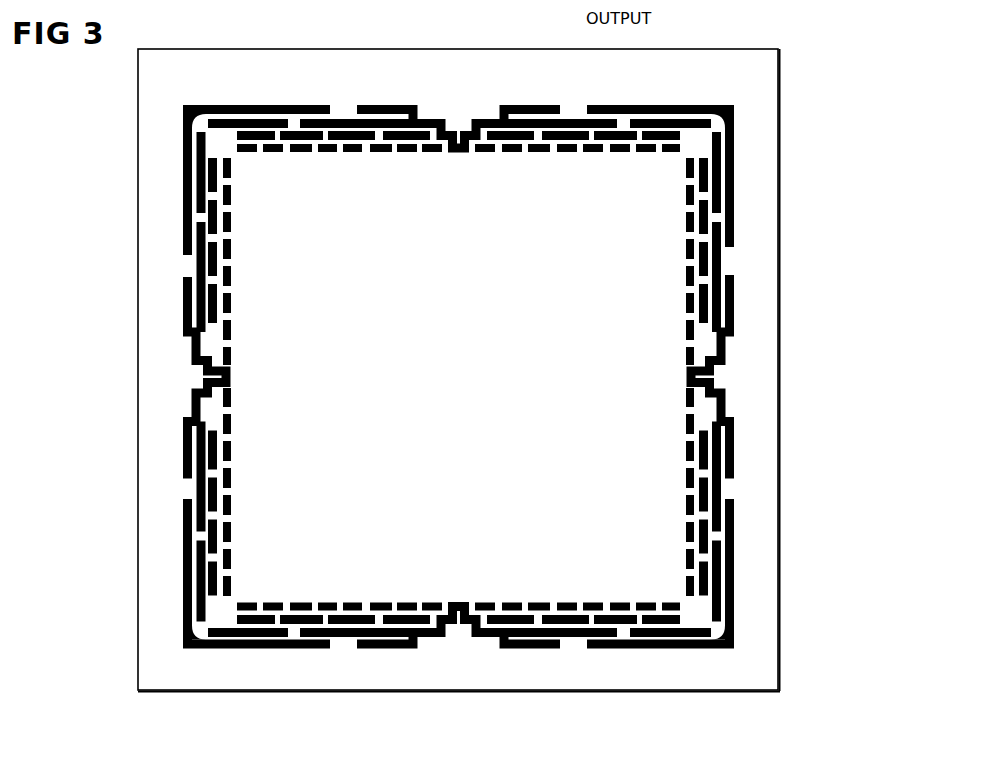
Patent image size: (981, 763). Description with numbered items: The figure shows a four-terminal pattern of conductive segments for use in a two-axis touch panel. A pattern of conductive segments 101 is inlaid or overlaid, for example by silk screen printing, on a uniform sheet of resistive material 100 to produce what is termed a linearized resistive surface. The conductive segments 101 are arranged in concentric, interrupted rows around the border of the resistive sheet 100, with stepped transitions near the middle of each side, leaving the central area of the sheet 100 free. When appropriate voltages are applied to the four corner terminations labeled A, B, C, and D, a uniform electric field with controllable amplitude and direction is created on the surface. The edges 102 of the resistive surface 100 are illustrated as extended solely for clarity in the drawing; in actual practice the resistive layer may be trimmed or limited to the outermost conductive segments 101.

The sheet of resistive material 100 is at (470, 358).
The conductive segments 101 is at (736, 279).
The edges of resistive surface 102 is at (469, 47).